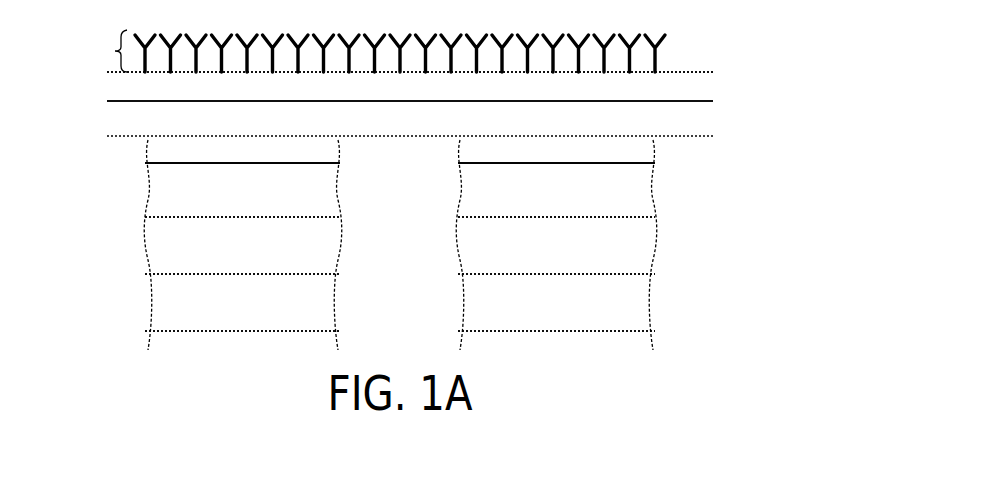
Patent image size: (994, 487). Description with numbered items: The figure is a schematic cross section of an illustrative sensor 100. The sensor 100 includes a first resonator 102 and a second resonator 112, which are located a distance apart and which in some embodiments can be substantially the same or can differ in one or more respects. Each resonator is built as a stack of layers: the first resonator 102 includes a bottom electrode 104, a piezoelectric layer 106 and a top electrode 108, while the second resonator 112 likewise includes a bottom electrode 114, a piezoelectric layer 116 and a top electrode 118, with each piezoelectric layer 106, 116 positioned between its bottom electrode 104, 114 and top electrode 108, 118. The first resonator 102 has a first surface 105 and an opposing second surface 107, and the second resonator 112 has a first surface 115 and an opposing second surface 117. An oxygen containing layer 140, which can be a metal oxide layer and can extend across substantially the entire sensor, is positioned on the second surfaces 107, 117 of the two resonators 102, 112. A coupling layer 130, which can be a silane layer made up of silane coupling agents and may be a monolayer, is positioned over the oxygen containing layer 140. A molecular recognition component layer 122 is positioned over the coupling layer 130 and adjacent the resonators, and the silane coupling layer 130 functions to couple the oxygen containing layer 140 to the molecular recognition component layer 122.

The sensor 100 is at (767, 118).
The first resonator 102 is at (112, 145).
The bottom electrode 104 is at (218, 310).
The first surface 105 is at (203, 331).
The piezoelectric layer 106 is at (218, 253).
The second surface 107 is at (197, 164).
The top electrode 108 is at (218, 187).
The second resonator 112 is at (690, 140).
The bottom electrode 114 is at (536, 312).
The first surface 115 is at (597, 331).
The piezoelectric layer 116 is at (536, 256).
The second surface 117 is at (608, 164).
The top electrode 118 is at (536, 198).
The molecular recognition component layer 122 is at (391, 51).
The coupling layer 130 is at (271, 95).
The oxygen containing layer 140 is at (368, 130).